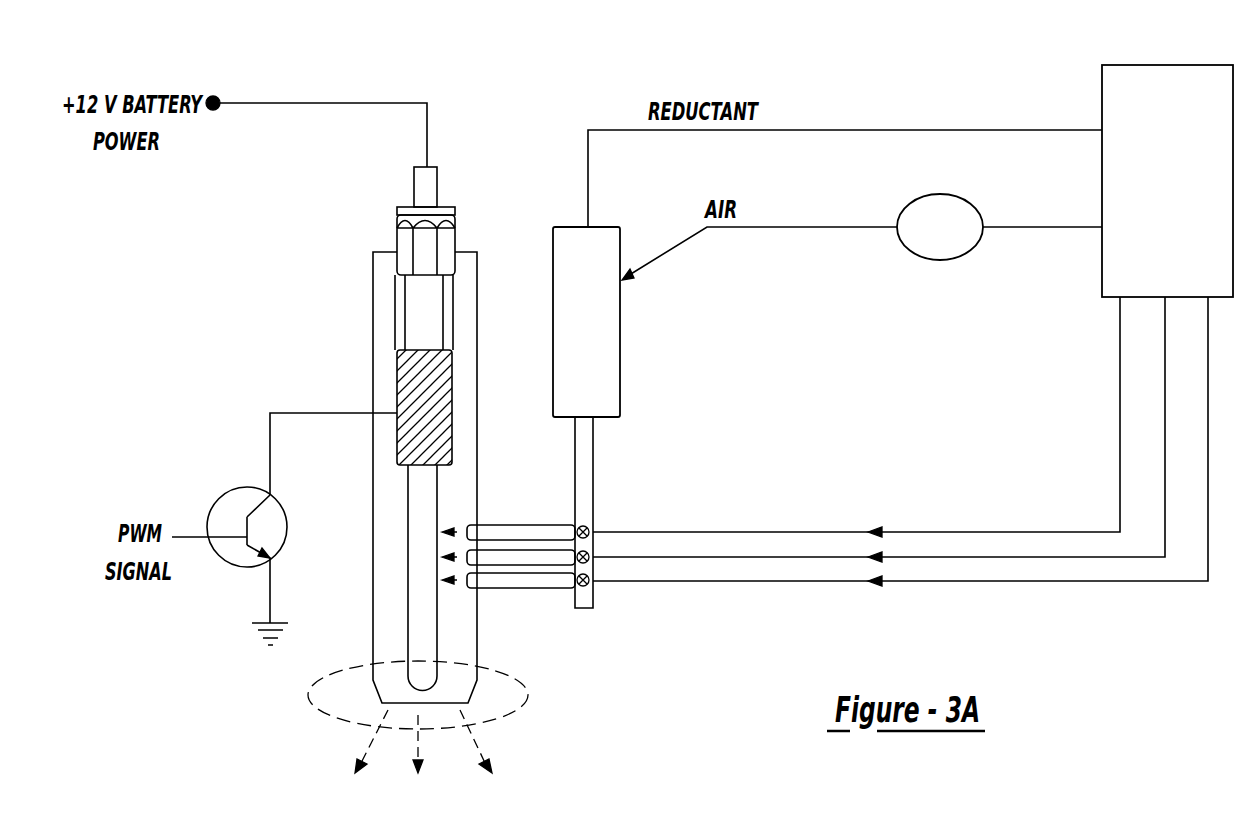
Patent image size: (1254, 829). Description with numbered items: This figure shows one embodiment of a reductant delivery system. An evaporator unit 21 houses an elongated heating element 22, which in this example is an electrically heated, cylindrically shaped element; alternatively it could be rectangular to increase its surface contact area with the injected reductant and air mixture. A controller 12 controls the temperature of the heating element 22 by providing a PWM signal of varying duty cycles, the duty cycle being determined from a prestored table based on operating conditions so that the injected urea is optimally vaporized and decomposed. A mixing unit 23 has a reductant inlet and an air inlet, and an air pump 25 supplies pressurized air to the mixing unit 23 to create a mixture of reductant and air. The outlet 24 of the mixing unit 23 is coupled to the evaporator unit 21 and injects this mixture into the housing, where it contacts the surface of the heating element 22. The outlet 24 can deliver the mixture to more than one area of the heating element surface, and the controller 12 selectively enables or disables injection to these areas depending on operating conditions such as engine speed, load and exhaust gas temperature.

The controller 12 is at (1117, 65).
The evaporator unit 21 is at (493, 276).
The heating element 22 is at (430, 497).
The mixing unit 23 is at (622, 375).
The outlet 24 is at (593, 475).
The air pump 25 is at (943, 194).